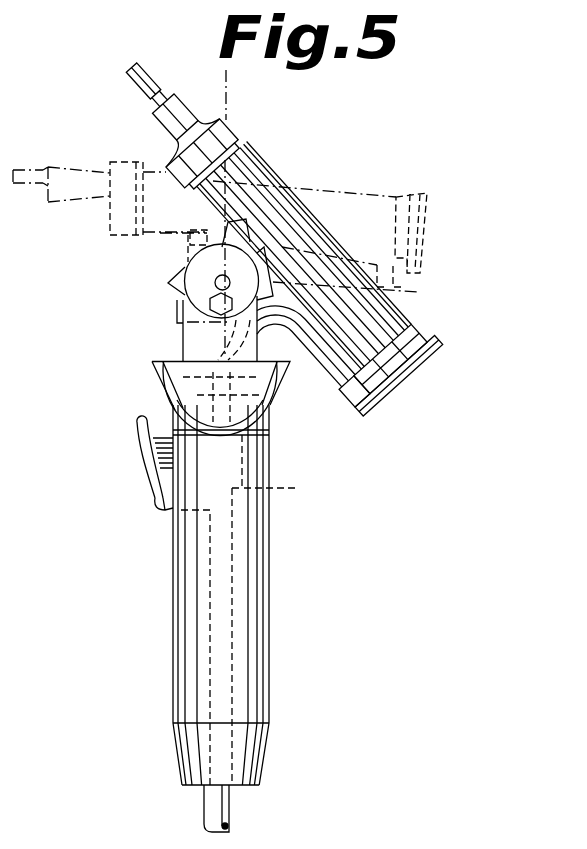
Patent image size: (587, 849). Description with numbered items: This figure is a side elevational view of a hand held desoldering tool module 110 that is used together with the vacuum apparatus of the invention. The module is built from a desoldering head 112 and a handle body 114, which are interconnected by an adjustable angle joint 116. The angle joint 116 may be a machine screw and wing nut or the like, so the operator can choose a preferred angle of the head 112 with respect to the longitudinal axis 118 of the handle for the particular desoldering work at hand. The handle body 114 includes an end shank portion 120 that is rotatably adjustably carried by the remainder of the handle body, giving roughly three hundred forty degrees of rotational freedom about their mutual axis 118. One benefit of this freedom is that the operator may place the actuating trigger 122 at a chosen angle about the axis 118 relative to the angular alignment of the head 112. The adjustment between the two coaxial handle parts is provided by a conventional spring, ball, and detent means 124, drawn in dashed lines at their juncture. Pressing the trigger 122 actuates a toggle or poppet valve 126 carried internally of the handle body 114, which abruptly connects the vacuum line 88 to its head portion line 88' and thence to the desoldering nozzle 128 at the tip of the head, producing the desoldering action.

The vacuum line 88 is at (262, 809).
The head portion line 88' is at (306, 387).
The hand held desoldering tool module 110 is at (448, 193).
The desoldering head 112 is at (405, 325).
The handle body 114 is at (270, 562).
The adjustable angle joint 116 is at (216, 280).
The longitudinal axis 118 is at (258, 158).
The end shank portion 120 is at (183, 330).
The actuating trigger 122 is at (153, 487).
The spring, ball, and detent means 124 is at (165, 387).
The toggle or poppet valve 126 is at (297, 488).
The desoldering nozzle 128 is at (134, 81).